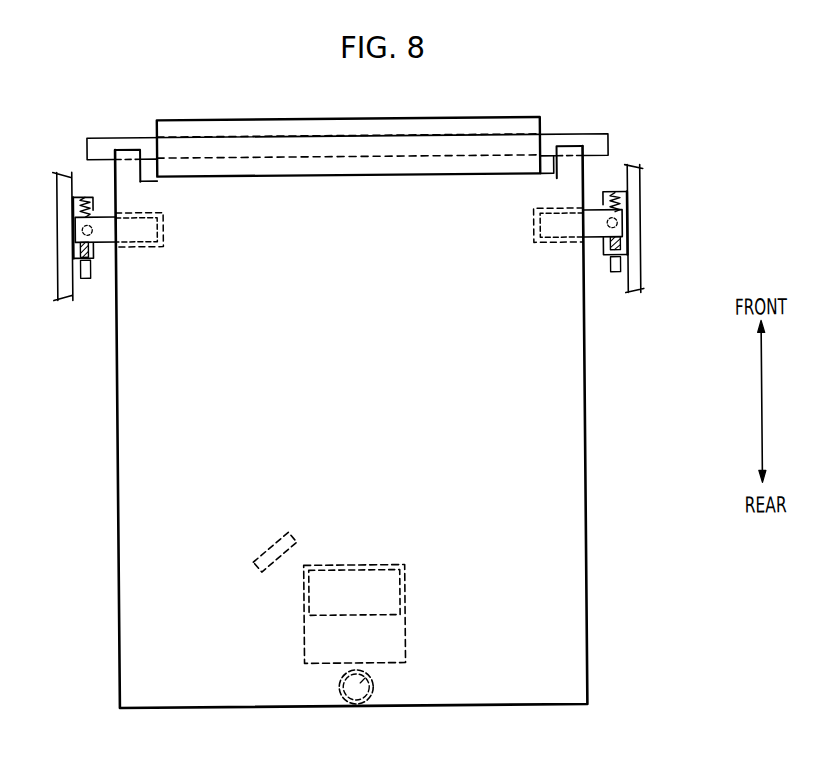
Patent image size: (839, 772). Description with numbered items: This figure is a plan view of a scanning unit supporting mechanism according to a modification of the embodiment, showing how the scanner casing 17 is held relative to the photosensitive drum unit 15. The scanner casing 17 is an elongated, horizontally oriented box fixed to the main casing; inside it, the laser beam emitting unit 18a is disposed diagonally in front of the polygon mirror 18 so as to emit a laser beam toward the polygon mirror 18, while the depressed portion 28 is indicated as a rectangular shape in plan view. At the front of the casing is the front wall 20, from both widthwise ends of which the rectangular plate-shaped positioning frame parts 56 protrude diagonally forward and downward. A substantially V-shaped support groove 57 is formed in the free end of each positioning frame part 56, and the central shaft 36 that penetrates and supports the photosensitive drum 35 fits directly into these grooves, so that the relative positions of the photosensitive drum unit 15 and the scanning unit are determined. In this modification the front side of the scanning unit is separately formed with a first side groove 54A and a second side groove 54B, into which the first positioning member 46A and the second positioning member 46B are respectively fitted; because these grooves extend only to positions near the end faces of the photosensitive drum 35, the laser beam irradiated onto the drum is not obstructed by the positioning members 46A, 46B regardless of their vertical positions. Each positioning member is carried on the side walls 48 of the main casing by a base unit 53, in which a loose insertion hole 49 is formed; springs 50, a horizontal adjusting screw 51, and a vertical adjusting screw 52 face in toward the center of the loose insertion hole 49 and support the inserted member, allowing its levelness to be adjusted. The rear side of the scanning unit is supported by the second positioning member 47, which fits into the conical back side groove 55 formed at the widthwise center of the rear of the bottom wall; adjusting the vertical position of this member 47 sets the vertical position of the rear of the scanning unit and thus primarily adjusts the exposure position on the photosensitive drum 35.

The photosensitive drum unit 15 is at (350, 120).
The scanner casing 17 is at (317, 708).
The polygon mirror 18 is at (404, 588).
The laser beam emitting unit 18a is at (272, 543).
The front wall 20 is at (242, 175).
The depressed portion 28 is at (306, 595).
The photosensitive drum 35 is at (416, 118).
The central shaft 36 is at (598, 136).
The first positioning member 46A is at (159, 240).
The second positioning member 46B is at (542, 242).
The second positioning member 47 is at (338, 683).
The side walls 48 is at (59, 271).
The loose insertion hole 49 is at (95, 241).
The spring 50 is at (97, 203).
The horizontal adjusting screw 51 is at (90, 276).
The vertical adjusting screw 52 is at (74, 230).
The base unit 53 is at (85, 195).
The first side groove 54A is at (165, 228).
The second side groove 54B is at (536, 225).
The back side groove 55 is at (371, 683).
The positioning frame parts 56 is at (145, 170).
The support groove 57 is at (130, 136).